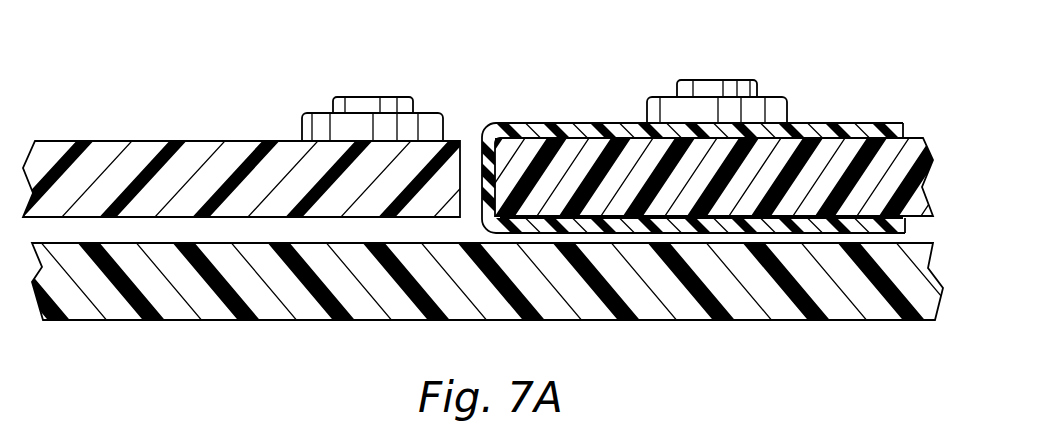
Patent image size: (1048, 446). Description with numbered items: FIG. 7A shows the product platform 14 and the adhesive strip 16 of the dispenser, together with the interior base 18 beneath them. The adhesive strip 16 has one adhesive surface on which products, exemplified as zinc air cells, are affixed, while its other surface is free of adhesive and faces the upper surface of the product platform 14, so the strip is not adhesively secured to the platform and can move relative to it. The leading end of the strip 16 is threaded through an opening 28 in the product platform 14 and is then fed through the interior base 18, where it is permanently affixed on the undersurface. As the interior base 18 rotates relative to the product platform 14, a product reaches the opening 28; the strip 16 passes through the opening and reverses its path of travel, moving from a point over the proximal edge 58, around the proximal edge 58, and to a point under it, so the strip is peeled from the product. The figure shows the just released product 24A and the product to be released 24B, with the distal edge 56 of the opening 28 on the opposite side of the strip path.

The product platform 14 is at (128, 158).
The adhesive strip 16 is at (600, 127).
The interior base 18 is at (197, 292).
The just released product 24A is at (357, 104).
The product to be released 24B is at (730, 84).
The opening 28 is at (470, 198).
The distal edge 56 is at (462, 176).
The proximal edge 58 is at (498, 157).